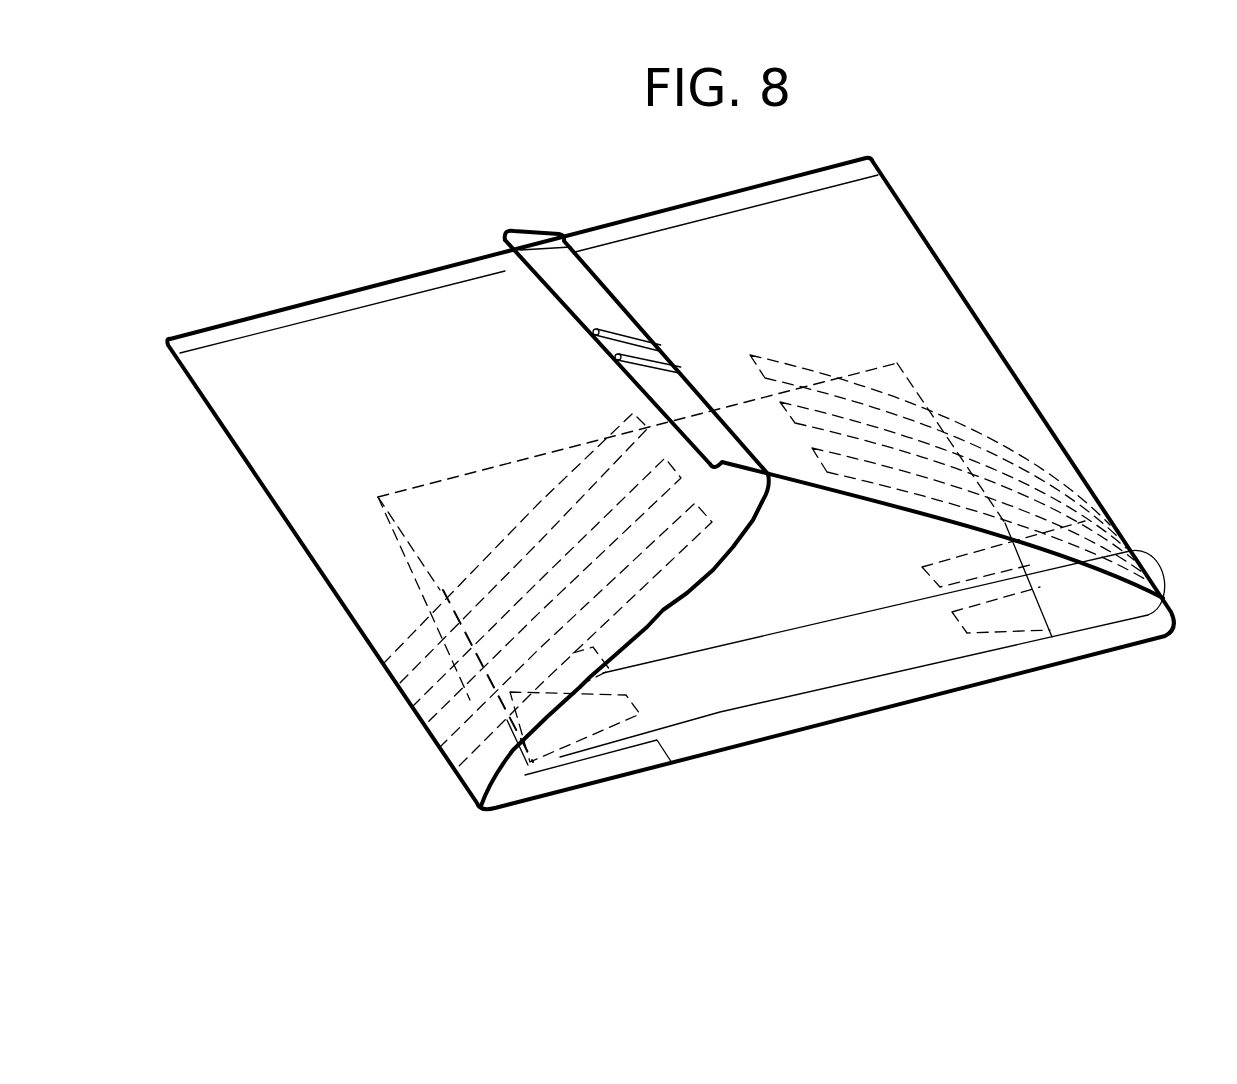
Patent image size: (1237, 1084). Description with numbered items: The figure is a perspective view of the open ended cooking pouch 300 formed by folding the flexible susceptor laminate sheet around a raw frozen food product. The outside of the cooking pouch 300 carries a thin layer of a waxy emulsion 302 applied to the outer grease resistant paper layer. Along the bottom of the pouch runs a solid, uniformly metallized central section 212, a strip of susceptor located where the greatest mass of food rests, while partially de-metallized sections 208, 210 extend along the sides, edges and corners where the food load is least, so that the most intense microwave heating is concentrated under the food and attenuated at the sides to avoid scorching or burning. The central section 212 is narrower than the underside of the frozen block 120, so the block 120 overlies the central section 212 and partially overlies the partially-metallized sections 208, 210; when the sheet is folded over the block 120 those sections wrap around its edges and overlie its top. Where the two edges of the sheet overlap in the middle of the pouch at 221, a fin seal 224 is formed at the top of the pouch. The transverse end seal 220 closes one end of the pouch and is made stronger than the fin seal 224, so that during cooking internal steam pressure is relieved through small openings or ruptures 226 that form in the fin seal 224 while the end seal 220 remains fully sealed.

The frozen block 120 is at (423, 498).
The partially-metallized section 208 is at (536, 830).
The partially-metallized section 210 is at (1133, 665).
The central section 212 is at (893, 676).
The end seal 220 is at (372, 292).
The overlap of laminate layers 221 is at (541, 215).
The fin seal 224 is at (722, 266).
The openings 226 is at (618, 358).
The cooking pouch 300 is at (1130, 452).
The waxy emulsion layer 302 is at (892, 242).